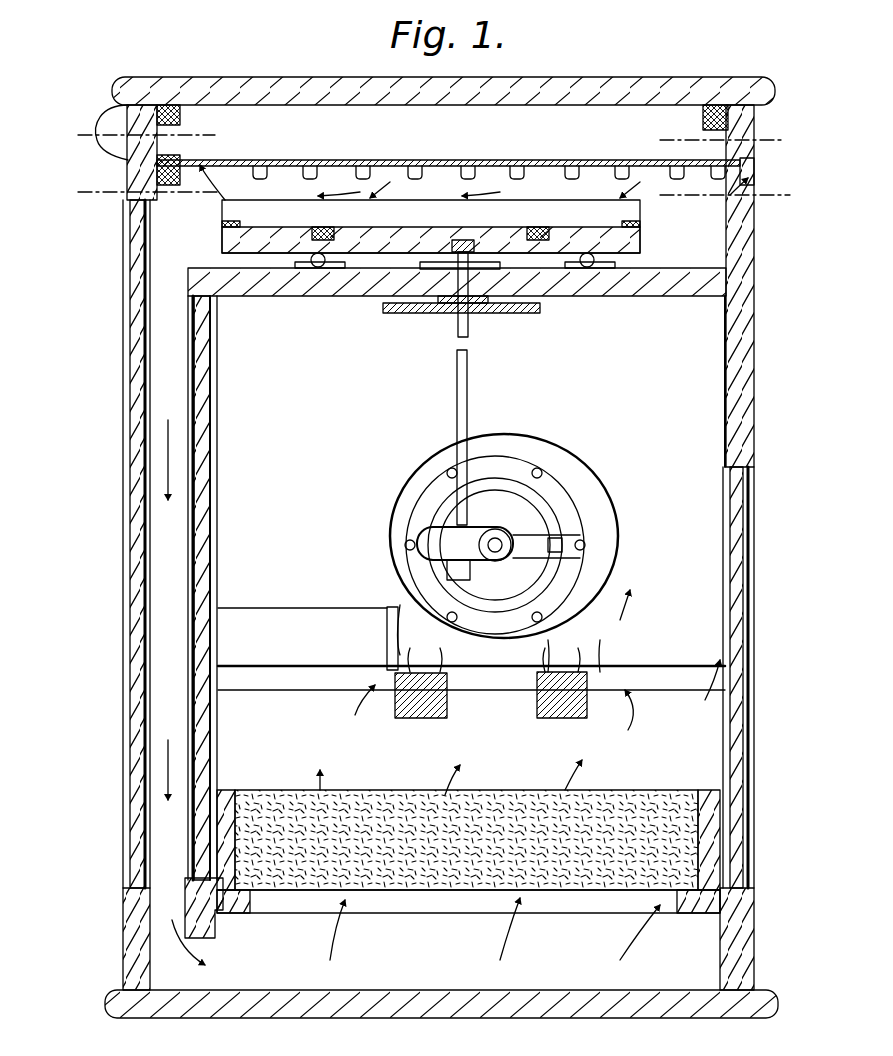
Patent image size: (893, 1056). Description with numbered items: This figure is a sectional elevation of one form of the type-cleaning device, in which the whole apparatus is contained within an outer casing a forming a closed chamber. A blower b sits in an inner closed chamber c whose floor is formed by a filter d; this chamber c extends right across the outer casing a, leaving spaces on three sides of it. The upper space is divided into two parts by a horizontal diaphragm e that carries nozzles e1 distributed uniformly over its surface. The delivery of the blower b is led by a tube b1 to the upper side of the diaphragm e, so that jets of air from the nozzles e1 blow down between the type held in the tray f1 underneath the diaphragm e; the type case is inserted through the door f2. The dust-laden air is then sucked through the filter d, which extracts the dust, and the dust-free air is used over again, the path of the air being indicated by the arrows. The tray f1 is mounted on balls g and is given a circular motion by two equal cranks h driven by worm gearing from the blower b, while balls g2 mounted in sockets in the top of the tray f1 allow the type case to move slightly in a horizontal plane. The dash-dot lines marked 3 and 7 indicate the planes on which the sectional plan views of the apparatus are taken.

The outer casing a is at (132, 480).
The blower b is at (572, 510).
The tube b1 is at (298, 620).
The inner closed chamber c is at (455, 617).
The filter d is at (640, 800).
The horizontal diaphragm e is at (442, 160).
The nozzles e1 is at (320, 160).
The tray f1 is at (392, 238).
The door f2 is at (752, 262).
The balls g is at (318, 268).
The balls g2 is at (323, 230).
The cranks h is at (126, 160).
The section line 3— 3 is at (427, 140).
The section line 7— 7 is at (430, 196).